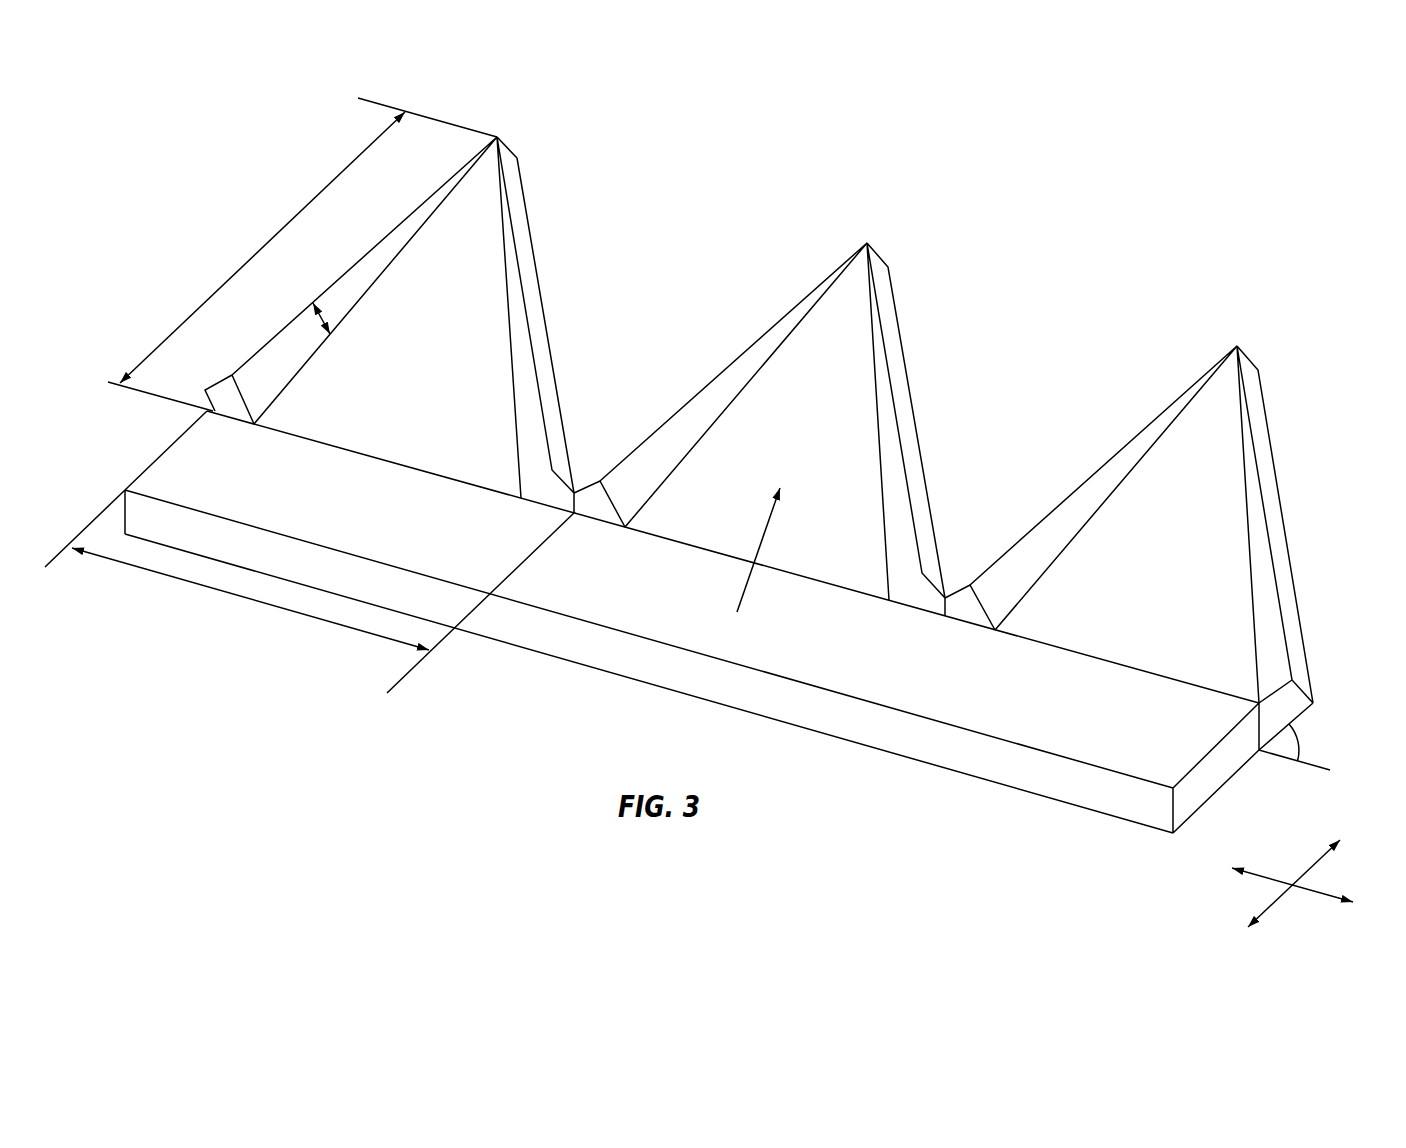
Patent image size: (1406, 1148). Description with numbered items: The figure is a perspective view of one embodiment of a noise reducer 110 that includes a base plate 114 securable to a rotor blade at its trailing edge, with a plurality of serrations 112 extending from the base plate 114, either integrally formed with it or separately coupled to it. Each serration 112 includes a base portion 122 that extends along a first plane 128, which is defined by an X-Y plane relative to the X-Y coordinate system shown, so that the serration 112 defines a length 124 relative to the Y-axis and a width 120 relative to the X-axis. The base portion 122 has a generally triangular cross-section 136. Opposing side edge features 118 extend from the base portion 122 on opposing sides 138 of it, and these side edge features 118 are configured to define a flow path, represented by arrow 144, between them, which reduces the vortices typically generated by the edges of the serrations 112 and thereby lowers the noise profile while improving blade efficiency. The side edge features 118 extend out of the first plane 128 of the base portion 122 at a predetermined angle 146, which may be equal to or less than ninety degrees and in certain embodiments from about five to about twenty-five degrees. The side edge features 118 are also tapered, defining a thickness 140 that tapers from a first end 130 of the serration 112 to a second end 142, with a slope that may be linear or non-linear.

The noise reducer 110 is at (247, 118).
The serration 112 is at (795, 290).
The base plate 114 is at (167, 457).
The side edge feature 118 is at (1137, 435).
The width 120 is at (218, 586).
The base portion 122 is at (762, 388).
The length 124 is at (282, 228).
The first plane 128 is at (1318, 882).
The first end 130 is at (238, 376).
The triangular cross-section 136 is at (857, 330).
The opposing sides 138 is at (437, 203).
The thickness 140 is at (321, 318).
The second end 142 is at (497, 132).
The flow path 144 is at (762, 547).
The predetermined angle 146 is at (1302, 740).